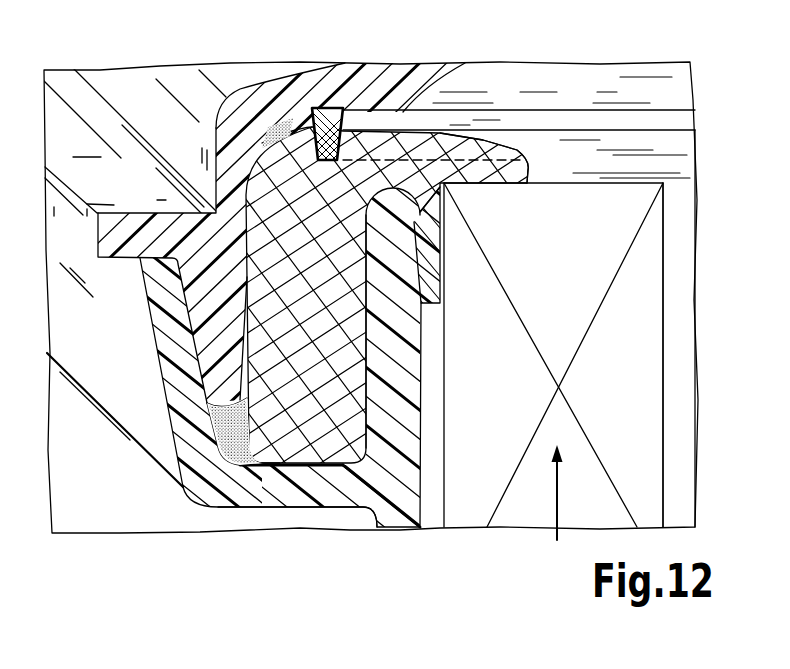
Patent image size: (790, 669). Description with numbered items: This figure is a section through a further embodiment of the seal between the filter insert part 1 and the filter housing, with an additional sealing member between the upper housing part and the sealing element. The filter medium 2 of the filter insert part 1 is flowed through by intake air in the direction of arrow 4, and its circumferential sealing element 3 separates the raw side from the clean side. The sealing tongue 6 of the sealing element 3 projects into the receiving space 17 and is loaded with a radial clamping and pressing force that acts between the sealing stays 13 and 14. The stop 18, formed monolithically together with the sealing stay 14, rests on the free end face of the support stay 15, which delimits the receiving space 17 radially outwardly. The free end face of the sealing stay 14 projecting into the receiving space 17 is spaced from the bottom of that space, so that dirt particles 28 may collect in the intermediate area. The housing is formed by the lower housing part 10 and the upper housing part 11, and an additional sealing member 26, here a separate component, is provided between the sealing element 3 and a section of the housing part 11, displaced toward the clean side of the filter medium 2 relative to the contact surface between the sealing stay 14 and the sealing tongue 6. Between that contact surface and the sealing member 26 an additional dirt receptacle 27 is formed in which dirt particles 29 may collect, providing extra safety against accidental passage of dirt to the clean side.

The air filter insert part 1 is at (559, 182).
The filter medium 2 is at (653, 217).
The sealing element 3 is at (498, 132).
The flow-through direction 4 is at (555, 520).
The sealing tongue 6 is at (302, 440).
The lower housing part 10 is at (400, 500).
The upper housing part 11 is at (437, 75).
The sealing stay 13 is at (410, 335).
The sealing stay 14 is at (217, 390).
The support stay 15 is at (177, 357).
The receiving space 17 is at (242, 470).
The stop 18 is at (137, 213).
The sealing member 26 is at (327, 118).
The dirt receptacle 27 is at (298, 127).
The dirt particles 28 is at (205, 433).
The dirt particles 29 is at (268, 115).